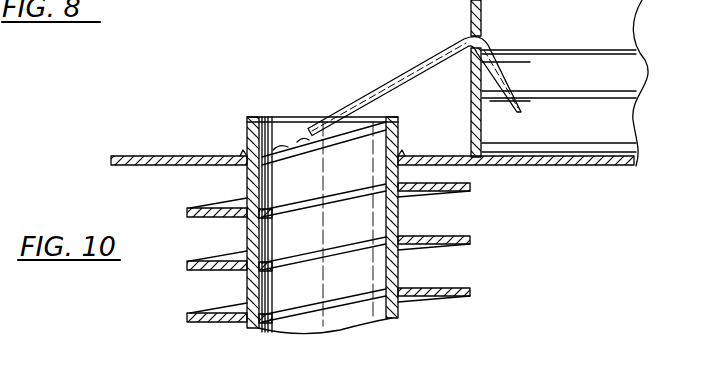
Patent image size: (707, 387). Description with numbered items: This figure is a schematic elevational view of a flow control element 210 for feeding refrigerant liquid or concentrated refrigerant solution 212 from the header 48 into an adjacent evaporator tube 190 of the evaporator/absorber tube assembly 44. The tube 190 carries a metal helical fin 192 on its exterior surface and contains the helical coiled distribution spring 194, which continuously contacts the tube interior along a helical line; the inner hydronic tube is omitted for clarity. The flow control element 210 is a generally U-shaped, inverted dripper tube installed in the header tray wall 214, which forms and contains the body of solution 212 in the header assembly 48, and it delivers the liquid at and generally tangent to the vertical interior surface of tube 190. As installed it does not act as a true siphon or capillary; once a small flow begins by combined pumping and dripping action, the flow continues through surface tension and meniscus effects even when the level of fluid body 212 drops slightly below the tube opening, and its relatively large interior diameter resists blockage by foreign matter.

The evaporator/absorber tube assembly 44 is at (320, 242).
The header 48 is at (560, 167).
The exterior metal tube 190 is at (247, 187).
The metal helical fin 192 is at (213, 262).
The helical coiled distribution spring 194 is at (283, 328).
The flow control element 210 is at (410, 72).
The refrigerant liquid or concentrated refrigerant solution 212 is at (601, 130).
The header tray wall 214 is at (470, 17).